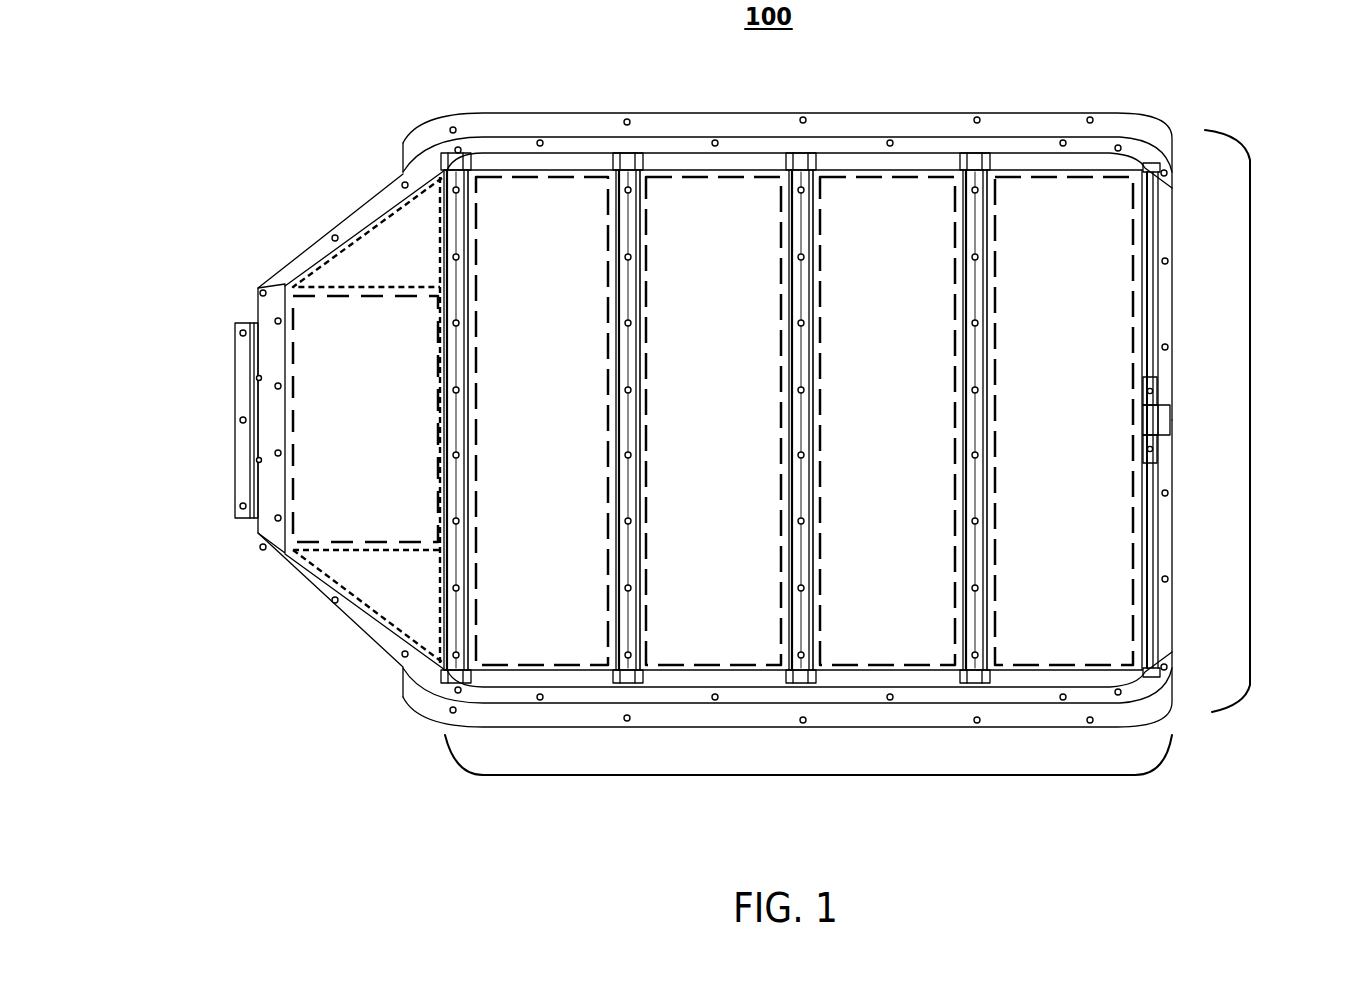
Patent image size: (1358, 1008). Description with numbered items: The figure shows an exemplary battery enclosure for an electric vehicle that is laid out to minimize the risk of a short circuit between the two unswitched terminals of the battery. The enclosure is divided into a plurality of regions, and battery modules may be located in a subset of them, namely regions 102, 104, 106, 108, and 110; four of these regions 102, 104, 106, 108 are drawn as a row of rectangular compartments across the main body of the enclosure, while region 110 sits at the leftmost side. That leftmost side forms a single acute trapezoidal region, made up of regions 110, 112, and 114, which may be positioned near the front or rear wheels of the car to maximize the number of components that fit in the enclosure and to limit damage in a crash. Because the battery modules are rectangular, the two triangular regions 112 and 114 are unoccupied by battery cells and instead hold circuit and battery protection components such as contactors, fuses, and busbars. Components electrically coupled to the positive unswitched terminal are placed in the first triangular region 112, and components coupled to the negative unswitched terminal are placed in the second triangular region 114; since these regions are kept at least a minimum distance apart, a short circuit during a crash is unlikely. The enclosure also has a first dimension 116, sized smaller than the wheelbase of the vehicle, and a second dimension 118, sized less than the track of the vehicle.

The region 102 is at (544, 193).
The region 104 is at (718, 193).
The region 106 is at (890, 193).
The region 108 is at (1062, 193).
The region 110 is at (317, 343).
The region 112 is at (398, 240).
The region 114 is at (388, 598).
The dimension 116 is at (805, 778).
The dimension 118 is at (1250, 419).